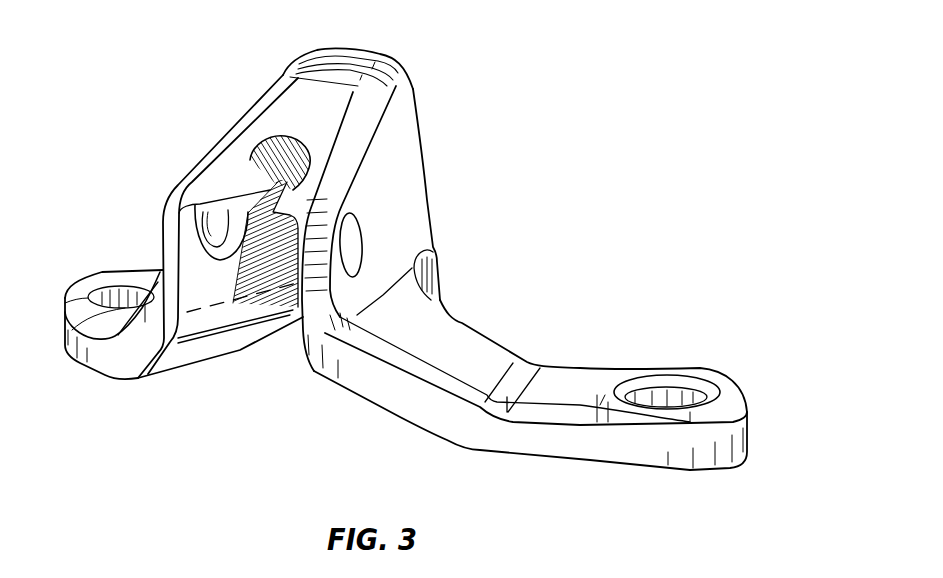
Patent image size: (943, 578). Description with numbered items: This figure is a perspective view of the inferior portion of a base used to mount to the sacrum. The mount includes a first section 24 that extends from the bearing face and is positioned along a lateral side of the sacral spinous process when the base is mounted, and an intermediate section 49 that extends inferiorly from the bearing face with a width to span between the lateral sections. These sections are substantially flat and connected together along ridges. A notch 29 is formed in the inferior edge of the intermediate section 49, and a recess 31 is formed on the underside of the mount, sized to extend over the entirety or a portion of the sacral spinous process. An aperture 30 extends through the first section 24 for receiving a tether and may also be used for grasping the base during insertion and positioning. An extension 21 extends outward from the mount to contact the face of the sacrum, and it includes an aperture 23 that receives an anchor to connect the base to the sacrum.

The extension 21 is at (448, 338).
The aperture 23 is at (687, 390).
The first section 24 is at (393, 167).
The notch 29 is at (273, 177).
The aperture 30 is at (205, 222).
The recess 31 is at (230, 382).
The intermediate section 49 is at (303, 103).